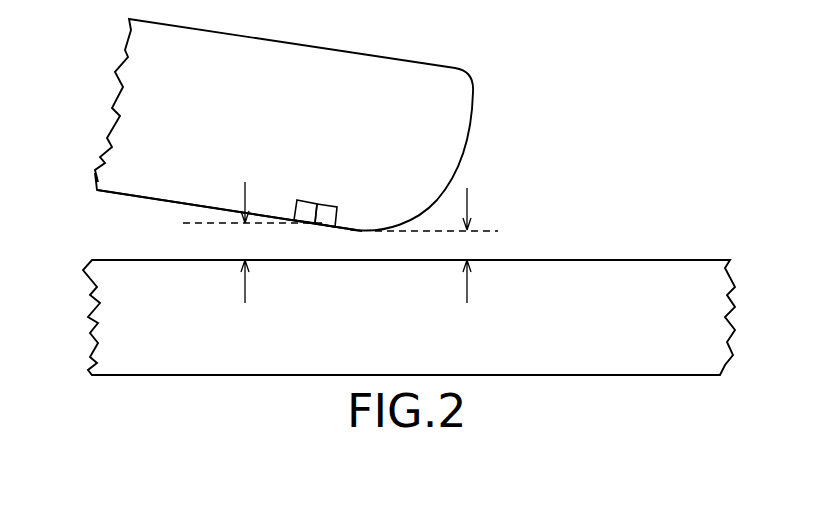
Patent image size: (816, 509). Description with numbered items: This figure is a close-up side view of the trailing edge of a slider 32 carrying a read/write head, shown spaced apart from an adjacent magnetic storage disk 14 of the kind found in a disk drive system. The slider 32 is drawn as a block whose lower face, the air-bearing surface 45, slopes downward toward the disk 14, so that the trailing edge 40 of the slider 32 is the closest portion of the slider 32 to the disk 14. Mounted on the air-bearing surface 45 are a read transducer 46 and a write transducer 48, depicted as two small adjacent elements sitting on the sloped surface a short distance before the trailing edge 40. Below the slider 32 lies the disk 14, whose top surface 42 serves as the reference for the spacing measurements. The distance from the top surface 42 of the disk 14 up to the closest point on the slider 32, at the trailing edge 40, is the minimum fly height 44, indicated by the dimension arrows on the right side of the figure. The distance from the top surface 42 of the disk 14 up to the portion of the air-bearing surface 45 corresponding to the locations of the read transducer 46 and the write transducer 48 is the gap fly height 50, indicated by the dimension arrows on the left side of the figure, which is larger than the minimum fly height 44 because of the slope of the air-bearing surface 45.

The storage disk 14 is at (572, 343).
The slider 32 is at (460, 90).
The trailing edge 40 is at (373, 232).
The top surface 42 is at (644, 254).
The minimum fly height 44 is at (482, 252).
The air-bearing surface 45 is at (155, 201).
The read transducer 46 is at (308, 200).
The write transducer 48 is at (333, 205).
The gap fly height 50 is at (230, 248).